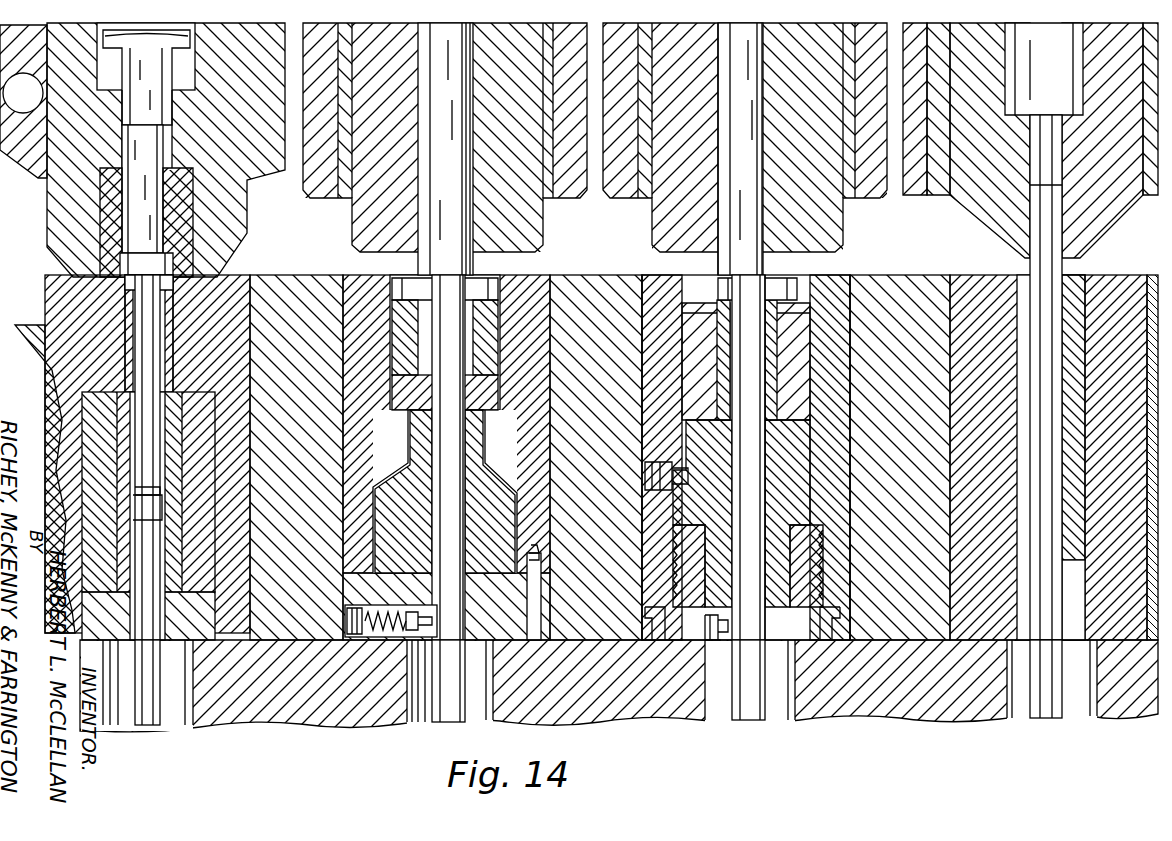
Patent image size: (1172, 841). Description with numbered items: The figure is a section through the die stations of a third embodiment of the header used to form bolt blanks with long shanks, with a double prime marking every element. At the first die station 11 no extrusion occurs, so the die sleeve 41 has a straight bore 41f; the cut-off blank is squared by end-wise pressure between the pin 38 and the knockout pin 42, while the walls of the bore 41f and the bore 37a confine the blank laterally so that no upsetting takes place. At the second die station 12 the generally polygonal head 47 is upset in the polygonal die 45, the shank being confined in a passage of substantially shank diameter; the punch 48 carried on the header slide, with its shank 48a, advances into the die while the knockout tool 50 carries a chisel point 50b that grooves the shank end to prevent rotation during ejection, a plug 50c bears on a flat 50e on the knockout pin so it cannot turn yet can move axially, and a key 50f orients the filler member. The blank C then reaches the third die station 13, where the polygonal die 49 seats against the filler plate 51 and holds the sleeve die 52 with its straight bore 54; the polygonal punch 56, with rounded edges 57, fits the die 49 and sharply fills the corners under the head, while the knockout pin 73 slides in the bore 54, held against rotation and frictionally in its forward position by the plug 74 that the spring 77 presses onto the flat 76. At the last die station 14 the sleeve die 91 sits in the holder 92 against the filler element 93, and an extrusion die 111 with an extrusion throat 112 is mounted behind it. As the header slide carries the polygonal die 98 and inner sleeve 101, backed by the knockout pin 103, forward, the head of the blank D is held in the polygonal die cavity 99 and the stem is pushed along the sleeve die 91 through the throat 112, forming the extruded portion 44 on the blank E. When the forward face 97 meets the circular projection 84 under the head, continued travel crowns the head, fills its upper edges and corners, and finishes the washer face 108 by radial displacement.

The first die station 11 is at (1092, 266).
The second die station 12 is at (790, 267).
The third die station 13 is at (490, 267).
The last die station 14 is at (238, 280).
The bore 37a is at (1036, 204).
The pin 38 is at (1064, 160).
The die sleeve 41 is at (1022, 384).
The straight bore 41f is at (1064, 414).
The knockout pin 42 is at (1065, 610).
The extruded portion 44 is at (165, 560).
The polygonal die 45 is at (792, 282).
The polygonal head 47 is at (718, 276).
The punch 48 is at (750, 178).
The punch shank 48a is at (725, 135).
The polygonal die 49 is at (392, 320).
The knockout tool 50 is at (770, 678).
The chisel point 50b is at (735, 582).
The plug 50c is at (708, 645).
The flat 50e is at (735, 708).
The key 50f is at (680, 460).
The filler plate 51 is at (492, 388).
The sleeve die 52 is at (480, 340).
The straight bore 54 is at (470, 433).
The polygonal punch 56 is at (462, 168).
The rounded edges 57 is at (460, 110).
The knockout pin 73 is at (470, 702).
The plug 74 is at (422, 615).
The flat 76 is at (436, 710).
The spring 77 is at (388, 604).
The circular projection 84 is at (480, 308).
The sleeve die 91 is at (172, 346).
The holder 92 is at (262, 436).
The filler element 93 is at (212, 602).
The forward face 97 is at (118, 276).
The polygonal die 98 is at (188, 230).
The polygonal die cavity 99 is at (180, 258).
The inner sleeve 101 is at (116, 228).
The knockout pin 103 is at (138, 155).
The washer face 108 is at (166, 290).
The extrusion die 111 is at (165, 492).
The extrusion throat 112 is at (162, 505).
The blank C is at (735, 446).
The blank D is at (432, 424).
The blank E is at (130, 440).